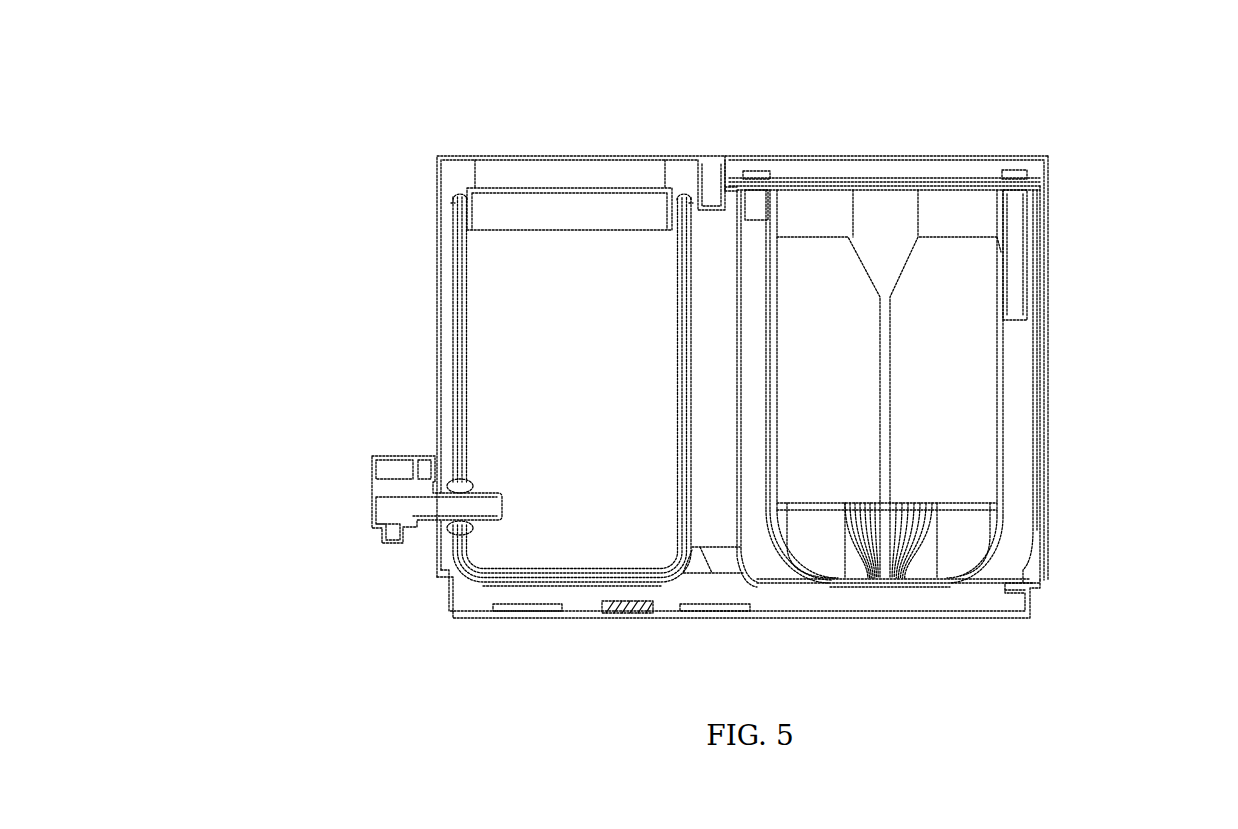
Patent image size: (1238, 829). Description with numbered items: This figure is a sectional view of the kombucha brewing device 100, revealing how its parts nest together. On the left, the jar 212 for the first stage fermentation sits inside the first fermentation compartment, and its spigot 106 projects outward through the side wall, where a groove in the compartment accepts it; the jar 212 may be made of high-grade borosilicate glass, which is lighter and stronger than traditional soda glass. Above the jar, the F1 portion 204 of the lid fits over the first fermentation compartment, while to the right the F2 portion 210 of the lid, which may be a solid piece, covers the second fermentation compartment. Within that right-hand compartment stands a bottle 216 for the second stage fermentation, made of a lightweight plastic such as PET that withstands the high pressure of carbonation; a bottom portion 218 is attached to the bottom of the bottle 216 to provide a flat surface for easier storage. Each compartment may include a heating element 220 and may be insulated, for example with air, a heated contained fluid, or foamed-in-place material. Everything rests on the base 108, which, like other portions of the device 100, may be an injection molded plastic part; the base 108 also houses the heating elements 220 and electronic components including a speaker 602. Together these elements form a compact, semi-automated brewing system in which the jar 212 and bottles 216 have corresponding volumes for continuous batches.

The kombucha brewing device 100 is at (686, 363).
The F1 portion 204 is at (472, 157).
The F2 portion 210 is at (950, 157).
The jar 212 is at (458, 346).
The spigot 106 is at (372, 493).
The bottle 216 is at (938, 386).
The bottom portion 218 is at (993, 528).
The heating element 220 is at (543, 576).
The base 108 is at (823, 622).
The speaker 602 is at (630, 608).